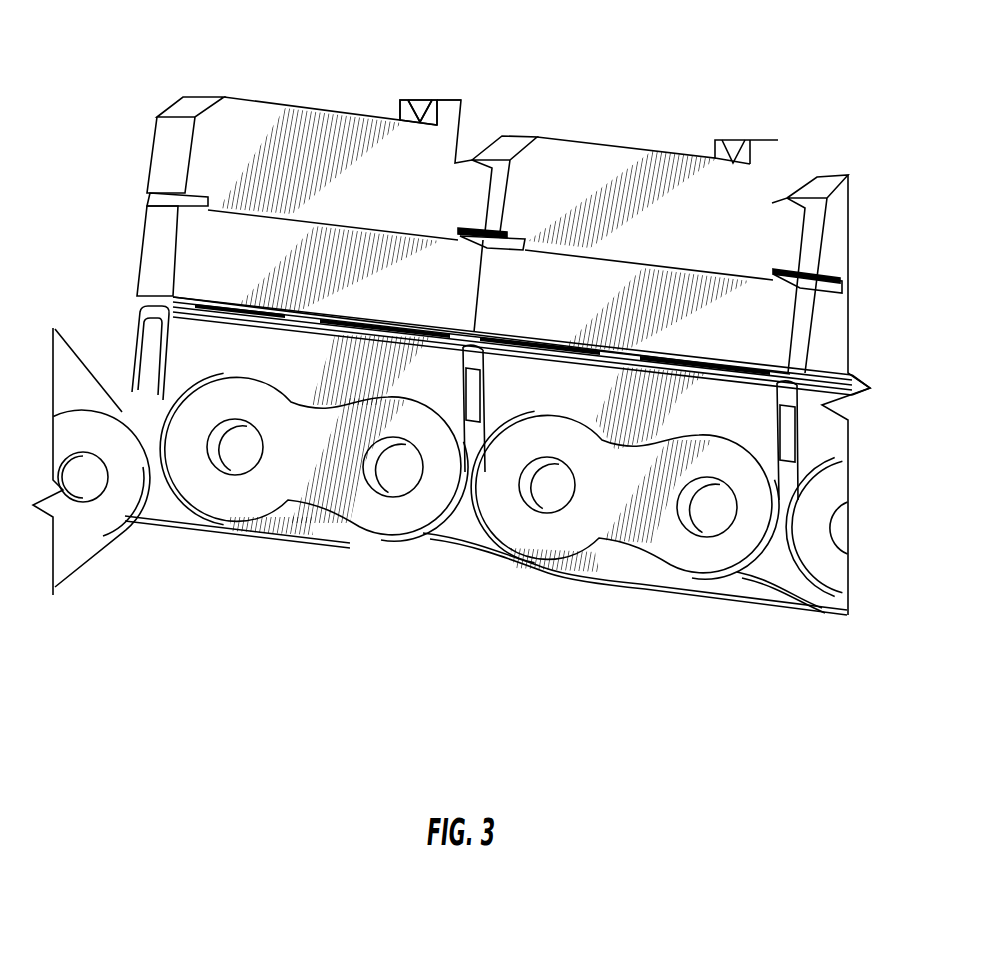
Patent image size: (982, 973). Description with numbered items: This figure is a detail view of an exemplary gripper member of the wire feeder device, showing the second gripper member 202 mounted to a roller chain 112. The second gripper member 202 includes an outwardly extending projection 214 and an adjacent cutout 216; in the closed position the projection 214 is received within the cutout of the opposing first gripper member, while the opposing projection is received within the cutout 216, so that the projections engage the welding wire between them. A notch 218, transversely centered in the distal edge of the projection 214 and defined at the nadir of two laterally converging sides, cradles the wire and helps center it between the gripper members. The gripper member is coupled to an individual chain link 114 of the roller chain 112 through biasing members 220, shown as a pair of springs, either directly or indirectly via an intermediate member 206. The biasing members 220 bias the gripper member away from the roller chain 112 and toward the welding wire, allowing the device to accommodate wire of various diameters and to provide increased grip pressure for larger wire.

The roller chain 112 is at (95, 495).
The chain link 114 is at (283, 523).
The second gripper member 202 is at (172, 135).
The intermediate member 206 is at (193, 253).
The projection 214 is at (452, 108).
The cutout 216 is at (465, 148).
The notch 218 is at (410, 103).
The biasing member 220 is at (203, 312).